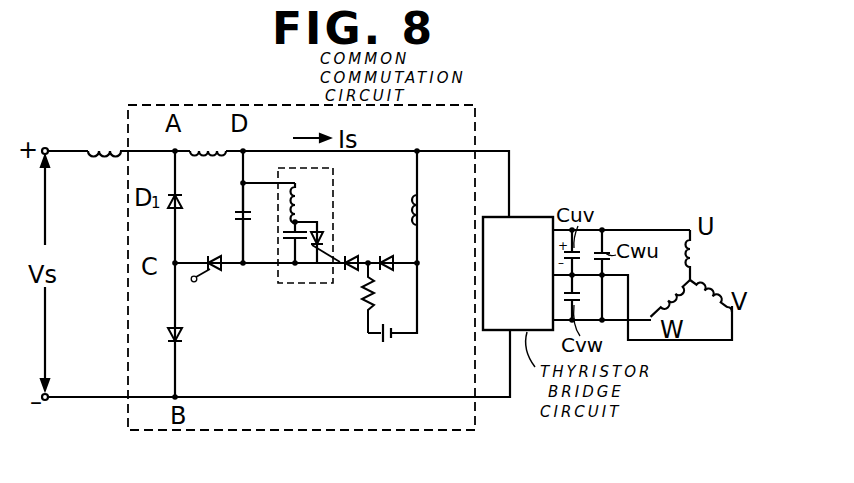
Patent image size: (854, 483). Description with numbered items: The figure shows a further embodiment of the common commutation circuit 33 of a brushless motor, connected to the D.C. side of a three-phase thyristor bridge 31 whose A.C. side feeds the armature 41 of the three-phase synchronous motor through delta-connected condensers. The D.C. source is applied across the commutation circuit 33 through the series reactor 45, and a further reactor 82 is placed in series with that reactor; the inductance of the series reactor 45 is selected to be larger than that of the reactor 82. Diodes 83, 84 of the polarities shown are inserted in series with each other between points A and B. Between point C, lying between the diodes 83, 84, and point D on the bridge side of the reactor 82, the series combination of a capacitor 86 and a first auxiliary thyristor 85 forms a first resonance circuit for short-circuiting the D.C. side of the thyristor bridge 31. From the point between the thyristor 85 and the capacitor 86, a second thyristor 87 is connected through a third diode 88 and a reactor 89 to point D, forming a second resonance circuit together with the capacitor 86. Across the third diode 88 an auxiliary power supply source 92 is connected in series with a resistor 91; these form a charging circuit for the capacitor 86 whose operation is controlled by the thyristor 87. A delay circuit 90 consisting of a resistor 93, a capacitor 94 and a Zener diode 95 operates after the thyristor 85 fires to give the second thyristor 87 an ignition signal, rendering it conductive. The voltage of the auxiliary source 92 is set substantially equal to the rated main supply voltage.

The three-phase thyristor bridge 31 is at (530, 216).
The common commutation circuit 33 is at (258, 106).
The armature 41 is at (690, 228).
The series reactor 45 is at (108, 149).
The reactor 82 is at (207, 148).
The diode 83 is at (183, 200).
The diode 84 is at (185, 336).
The first auxiliary thyristor 85 is at (217, 273).
The capacitor 86 is at (235, 216).
The second thyristor 87 is at (347, 270).
The third diode 88 is at (385, 257).
The reactor 89 is at (421, 208).
The delay circuit 90 is at (334, 193).
The resistor 91 is at (386, 298).
The auxiliary power supply source 92 is at (384, 344).
The resistor 93 is at (297, 206).
The capacitor 94 is at (293, 242).
The Zener diode 95 is at (327, 233).